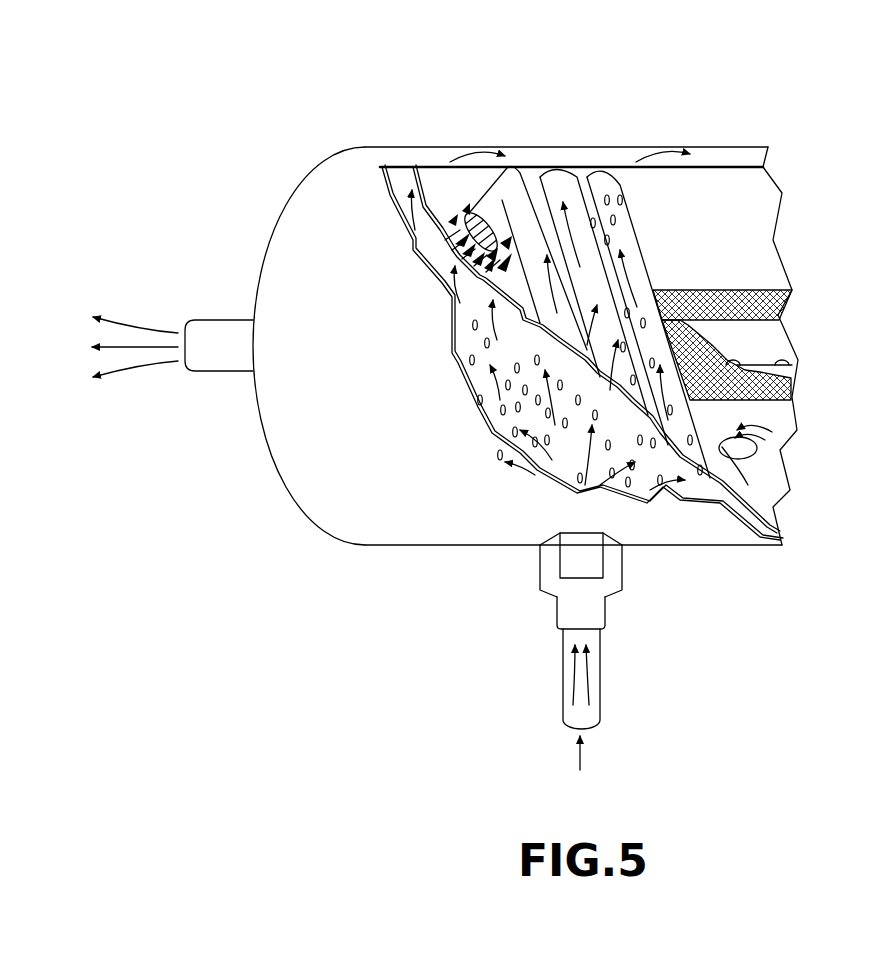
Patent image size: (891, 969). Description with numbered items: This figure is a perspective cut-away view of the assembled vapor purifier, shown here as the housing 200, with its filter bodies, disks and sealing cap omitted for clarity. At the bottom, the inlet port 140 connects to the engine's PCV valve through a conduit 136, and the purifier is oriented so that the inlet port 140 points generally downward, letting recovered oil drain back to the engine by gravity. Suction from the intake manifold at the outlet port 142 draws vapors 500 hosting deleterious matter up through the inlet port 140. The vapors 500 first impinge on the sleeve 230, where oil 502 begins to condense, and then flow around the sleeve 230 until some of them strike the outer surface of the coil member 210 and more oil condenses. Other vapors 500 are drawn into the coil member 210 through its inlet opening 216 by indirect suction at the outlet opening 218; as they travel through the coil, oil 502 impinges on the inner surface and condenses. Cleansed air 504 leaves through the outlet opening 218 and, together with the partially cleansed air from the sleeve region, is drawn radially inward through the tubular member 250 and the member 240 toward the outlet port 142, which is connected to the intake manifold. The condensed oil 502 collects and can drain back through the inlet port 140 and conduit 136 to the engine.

The oil separator housing 200 is at (337, 188).
The sleeve 230 is at (397, 183).
The cleansed air 504 is at (149, 368).
The outlet opening 218 is at (460, 208).
The coil member 210 is at (527, 187).
The oil 502 is at (622, 200).
The tubular member 250 is at (672, 297).
The member 240 is at (733, 360).
The inlet opening 216 is at (758, 449).
The outlet port 142 is at (217, 335).
The vapors 500 is at (527, 448).
The inlet port 140 is at (570, 603).
The conduit 136 is at (600, 693).